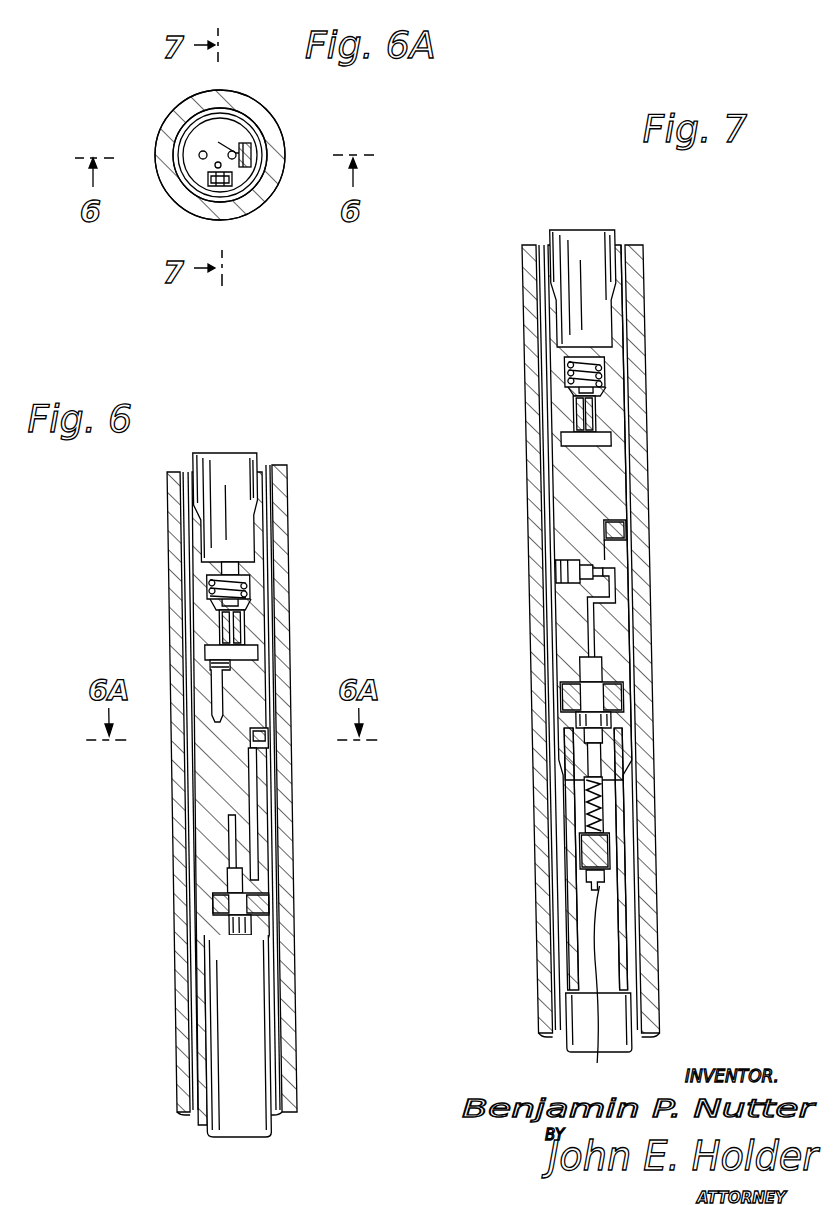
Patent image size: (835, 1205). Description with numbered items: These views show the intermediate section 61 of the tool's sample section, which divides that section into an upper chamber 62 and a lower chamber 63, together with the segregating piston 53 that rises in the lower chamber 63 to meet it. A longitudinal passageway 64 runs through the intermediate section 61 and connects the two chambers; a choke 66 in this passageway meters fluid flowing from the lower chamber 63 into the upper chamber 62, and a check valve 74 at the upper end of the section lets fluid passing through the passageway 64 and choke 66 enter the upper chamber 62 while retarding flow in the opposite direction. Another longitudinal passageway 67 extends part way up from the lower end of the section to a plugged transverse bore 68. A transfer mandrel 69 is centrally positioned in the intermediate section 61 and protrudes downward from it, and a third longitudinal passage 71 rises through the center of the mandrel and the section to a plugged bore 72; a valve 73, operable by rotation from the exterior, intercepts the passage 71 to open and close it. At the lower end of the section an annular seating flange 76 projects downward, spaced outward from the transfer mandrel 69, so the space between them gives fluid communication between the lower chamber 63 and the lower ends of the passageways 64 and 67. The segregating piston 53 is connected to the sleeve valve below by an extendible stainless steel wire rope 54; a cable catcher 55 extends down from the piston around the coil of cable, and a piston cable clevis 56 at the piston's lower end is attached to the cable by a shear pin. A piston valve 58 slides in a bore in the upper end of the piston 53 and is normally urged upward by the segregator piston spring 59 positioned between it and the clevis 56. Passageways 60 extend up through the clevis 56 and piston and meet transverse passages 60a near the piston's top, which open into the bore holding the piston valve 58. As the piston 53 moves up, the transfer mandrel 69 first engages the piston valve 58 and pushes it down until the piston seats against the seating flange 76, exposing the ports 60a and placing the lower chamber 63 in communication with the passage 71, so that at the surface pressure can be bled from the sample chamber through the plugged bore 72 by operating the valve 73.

In FIG. 7, the segregating piston 53 is at (590, 762).
In FIG. 7, the wire rope 54 is at (582, 945).
In FIG. 7, the cable catcher 55 is at (588, 880).
In FIG. 7, the piston cable clevis 56 is at (590, 852).
In FIG. 7, the piston valve 58 is at (590, 742).
In FIG. 7, the segregator piston spring 59 is at (590, 800).
In FIG. 7, the passageways 60 is at (566, 745).
In FIG. 7, the transverse passages 60a is at (560, 728).
In FIG. 6A, the intermediate section 61 is at (200, 125).
In FIG. 6, the intermediate section 61 is at (205, 772).
In FIG. 7, the intermediate section 61 is at (565, 470).
In FIG. 6, the upper chamber 62 is at (228, 453).
In FIG. 7, the upper chamber 62 is at (587, 238).
In FIG. 6, the lower chamber 63 is at (232, 1022).
In FIG. 7, the lower chamber 63 is at (590, 1018).
In FIG. 6A, the longitudinal passageway 64 is at (199, 154).
In FIG. 6, the longitudinal passageway 64 is at (222, 830).
In FIG. 6, the choke 66 is at (210, 690).
In FIG. 6A, the longitudinal passageway 67 is at (231, 150).
In FIG. 6, the longitudinal passageway 67 is at (252, 805).
In FIG. 6A, the plugged transverse bore 68 is at (244, 143).
In FIG. 6, the plugged transverse bore 68 is at (256, 730).
In FIG. 6, the transfer mandrel 69 is at (244, 925).
In FIG. 7, the transfer mandrel 69 is at (598, 718).
In FIG. 6A, the longitudinal passage 71 is at (215, 166).
In FIG. 6, the longitudinal passage 71 is at (240, 880).
In FIG. 7, the longitudinal passage 71 is at (590, 635).
In FIG. 6A, the plugged bore 72 is at (220, 187).
In FIG. 7, the plugged bore 72 is at (620, 530).
In FIG. 7, the valve 73 is at (550, 571).
In FIG. 6, the check valve 74 is at (242, 625).
In FIG. 7, the check valve 74 is at (590, 412).
In FIG. 6, the annular seating flange 76 is at (212, 910).
In FIG. 7, the annular seating flange 76 is at (606, 695).